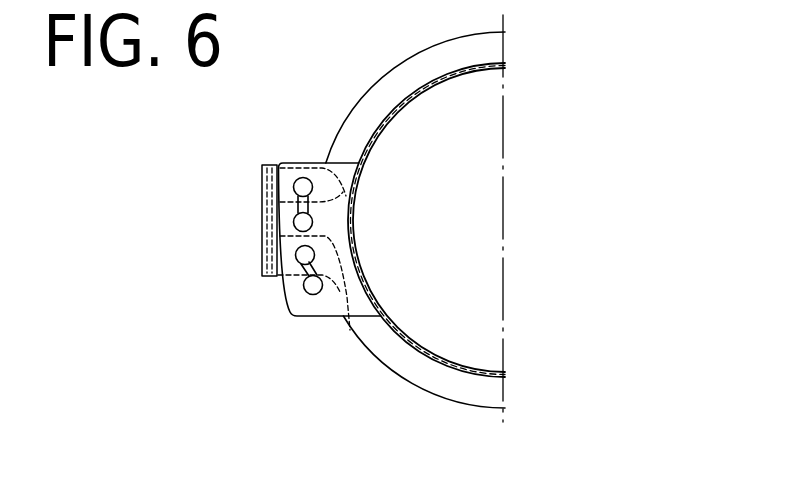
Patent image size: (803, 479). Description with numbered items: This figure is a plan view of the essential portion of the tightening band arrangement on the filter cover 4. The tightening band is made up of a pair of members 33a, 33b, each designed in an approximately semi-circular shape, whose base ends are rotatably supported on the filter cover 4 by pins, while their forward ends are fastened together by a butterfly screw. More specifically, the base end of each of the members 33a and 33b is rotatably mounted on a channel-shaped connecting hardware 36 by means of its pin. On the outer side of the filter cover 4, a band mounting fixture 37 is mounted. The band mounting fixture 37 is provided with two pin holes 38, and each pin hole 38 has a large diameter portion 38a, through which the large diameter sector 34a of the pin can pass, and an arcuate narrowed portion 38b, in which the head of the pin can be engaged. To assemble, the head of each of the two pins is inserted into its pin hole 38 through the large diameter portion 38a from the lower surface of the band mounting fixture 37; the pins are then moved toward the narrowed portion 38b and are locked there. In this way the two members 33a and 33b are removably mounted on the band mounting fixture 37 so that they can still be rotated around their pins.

The filter cover 4 is at (457, 75).
The member 33a is at (402, 368).
The member 33b is at (430, 63).
The large diameter sector 34a is at (303, 177).
The channel-shaped connecting hardware 36 is at (272, 165).
The band mounting fixture 37 is at (315, 310).
The pin hole 38 is at (158, 120).
The large diameter portion 38a is at (300, 222).
The arcuate narrowed portion 38b is at (291, 213).